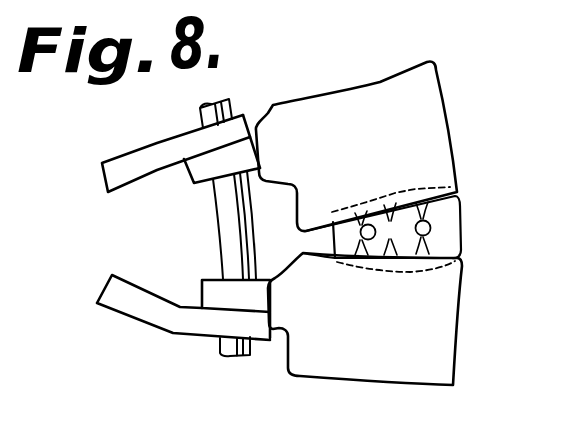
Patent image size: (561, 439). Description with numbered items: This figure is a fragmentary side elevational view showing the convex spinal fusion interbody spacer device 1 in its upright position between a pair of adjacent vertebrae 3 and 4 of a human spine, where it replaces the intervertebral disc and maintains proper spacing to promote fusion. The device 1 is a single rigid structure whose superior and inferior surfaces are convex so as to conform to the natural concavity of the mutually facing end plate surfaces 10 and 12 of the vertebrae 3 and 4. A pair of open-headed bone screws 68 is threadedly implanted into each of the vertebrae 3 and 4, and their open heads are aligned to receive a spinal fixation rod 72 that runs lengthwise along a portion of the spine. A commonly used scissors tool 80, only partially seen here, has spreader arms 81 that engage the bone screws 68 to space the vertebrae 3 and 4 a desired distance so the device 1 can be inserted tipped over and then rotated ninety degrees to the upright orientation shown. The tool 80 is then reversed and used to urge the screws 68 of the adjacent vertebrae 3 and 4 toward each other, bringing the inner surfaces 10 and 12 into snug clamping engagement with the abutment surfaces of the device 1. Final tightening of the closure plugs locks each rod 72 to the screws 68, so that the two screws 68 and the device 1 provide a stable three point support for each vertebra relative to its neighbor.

The convex spinal fusion interbody spacer device 1 is at (468, 232).
The vertebra 3 is at (313, 97).
The vertebra 4 is at (458, 336).
The end plate surface of vertebra 10 is at (400, 191).
The end plate surface of vertebra 12 is at (410, 273).
The open-headed bone screw 68 is at (197, 184).
The spinal fixation rod 72 is at (223, 106).
The scissors tool 80 is at (183, 212).
The spreader arm 81 is at (150, 142).